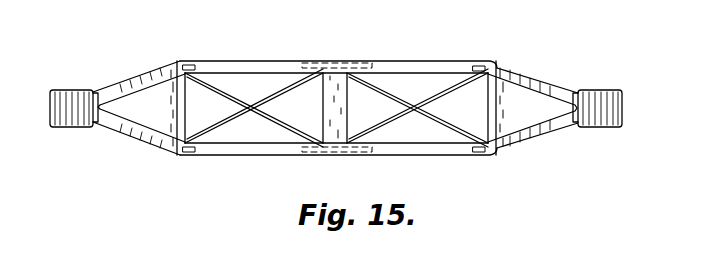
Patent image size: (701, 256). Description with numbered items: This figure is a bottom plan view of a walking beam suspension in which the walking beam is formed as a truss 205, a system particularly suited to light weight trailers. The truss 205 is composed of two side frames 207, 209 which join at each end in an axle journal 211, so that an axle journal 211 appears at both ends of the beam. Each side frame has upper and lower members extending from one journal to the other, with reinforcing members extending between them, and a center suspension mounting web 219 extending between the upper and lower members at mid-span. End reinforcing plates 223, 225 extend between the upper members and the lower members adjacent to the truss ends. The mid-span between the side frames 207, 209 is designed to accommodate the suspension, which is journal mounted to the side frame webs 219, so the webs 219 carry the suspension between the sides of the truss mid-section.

The truss 205 is at (462, 53).
The side frame 207 is at (245, 157).
The side frame 209 is at (261, 63).
The axle journal 211 is at (63, 102).
The center suspension mounting web 219 is at (337, 62).
The end reinforcing plate 223 is at (145, 102).
The end reinforcing plate 225 is at (343, 100).